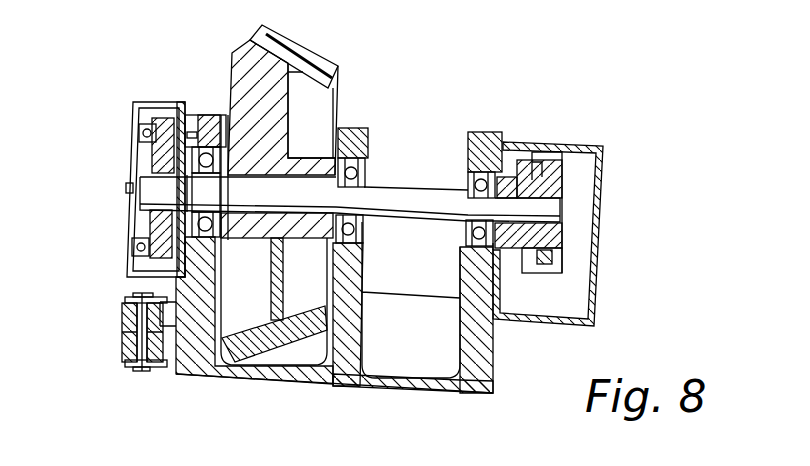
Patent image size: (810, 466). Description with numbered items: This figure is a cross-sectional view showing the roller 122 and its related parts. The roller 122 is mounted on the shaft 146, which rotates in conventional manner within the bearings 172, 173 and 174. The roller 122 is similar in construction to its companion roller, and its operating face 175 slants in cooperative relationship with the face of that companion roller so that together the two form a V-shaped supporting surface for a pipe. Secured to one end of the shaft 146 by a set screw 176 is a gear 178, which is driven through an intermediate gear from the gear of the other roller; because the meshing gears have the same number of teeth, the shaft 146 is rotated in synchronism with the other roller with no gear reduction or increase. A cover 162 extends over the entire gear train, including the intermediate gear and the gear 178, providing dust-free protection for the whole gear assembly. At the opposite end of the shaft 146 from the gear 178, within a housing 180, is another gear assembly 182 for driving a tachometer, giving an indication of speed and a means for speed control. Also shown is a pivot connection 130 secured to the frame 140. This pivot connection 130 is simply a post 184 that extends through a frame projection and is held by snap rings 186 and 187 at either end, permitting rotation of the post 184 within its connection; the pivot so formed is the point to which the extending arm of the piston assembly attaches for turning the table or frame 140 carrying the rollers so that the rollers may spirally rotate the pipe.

The roller 122 is at (250, 62).
The pivot connection 130 is at (97, 356).
The frame 140 is at (345, 372).
The shaft 146 is at (409, 194).
The cover 162 is at (600, 250).
The bearing 172 is at (366, 172).
The bearing 173 is at (468, 188).
The bearing 174 is at (213, 148).
The operating face 175 is at (296, 60).
The set screw 176 is at (516, 176).
The gear 178 is at (541, 273).
The housing 180 is at (132, 170).
The gear assembly 182 is at (132, 158).
The post 184 is at (133, 345).
The snap ring 186 is at (128, 361).
The snap ring 187 is at (127, 298).